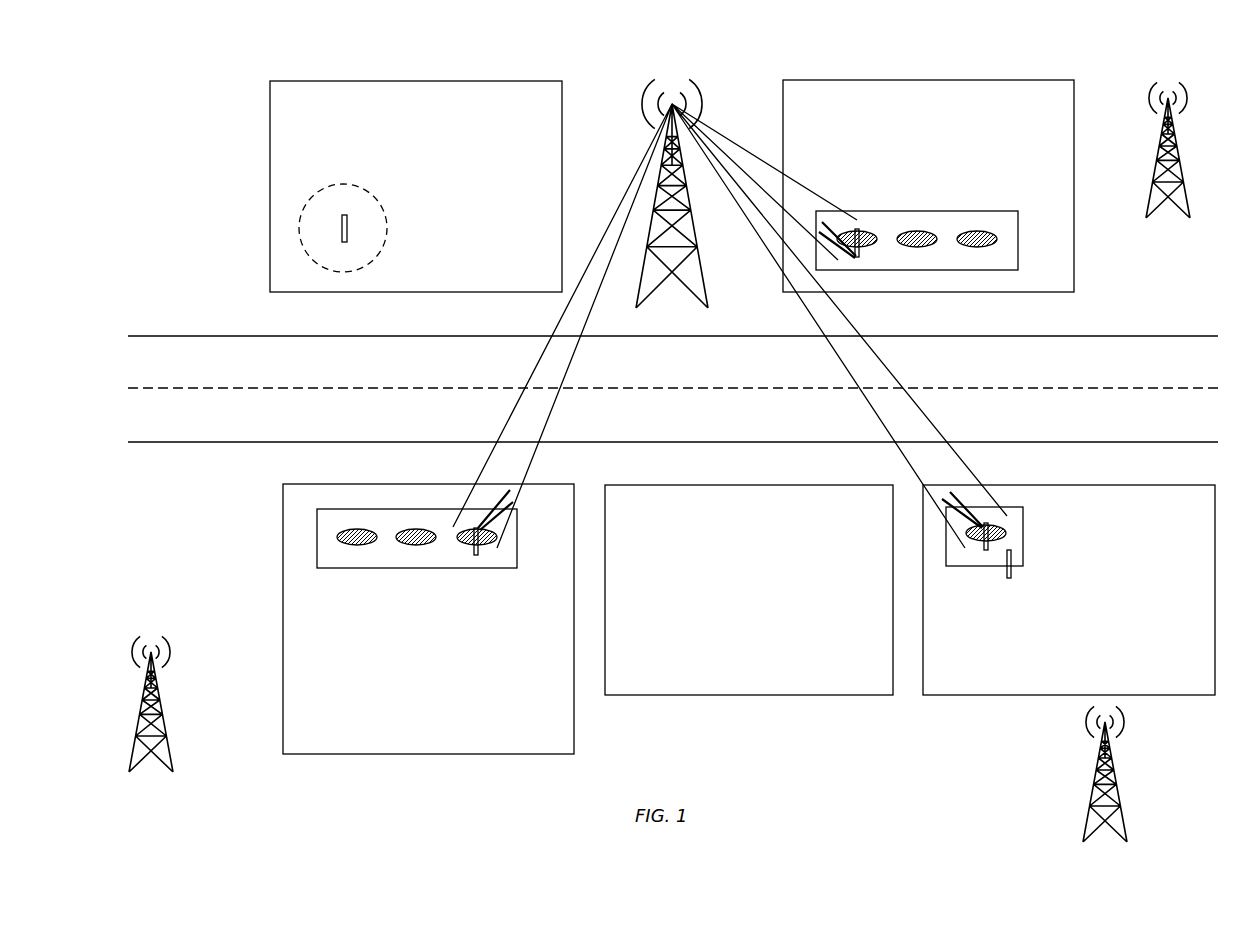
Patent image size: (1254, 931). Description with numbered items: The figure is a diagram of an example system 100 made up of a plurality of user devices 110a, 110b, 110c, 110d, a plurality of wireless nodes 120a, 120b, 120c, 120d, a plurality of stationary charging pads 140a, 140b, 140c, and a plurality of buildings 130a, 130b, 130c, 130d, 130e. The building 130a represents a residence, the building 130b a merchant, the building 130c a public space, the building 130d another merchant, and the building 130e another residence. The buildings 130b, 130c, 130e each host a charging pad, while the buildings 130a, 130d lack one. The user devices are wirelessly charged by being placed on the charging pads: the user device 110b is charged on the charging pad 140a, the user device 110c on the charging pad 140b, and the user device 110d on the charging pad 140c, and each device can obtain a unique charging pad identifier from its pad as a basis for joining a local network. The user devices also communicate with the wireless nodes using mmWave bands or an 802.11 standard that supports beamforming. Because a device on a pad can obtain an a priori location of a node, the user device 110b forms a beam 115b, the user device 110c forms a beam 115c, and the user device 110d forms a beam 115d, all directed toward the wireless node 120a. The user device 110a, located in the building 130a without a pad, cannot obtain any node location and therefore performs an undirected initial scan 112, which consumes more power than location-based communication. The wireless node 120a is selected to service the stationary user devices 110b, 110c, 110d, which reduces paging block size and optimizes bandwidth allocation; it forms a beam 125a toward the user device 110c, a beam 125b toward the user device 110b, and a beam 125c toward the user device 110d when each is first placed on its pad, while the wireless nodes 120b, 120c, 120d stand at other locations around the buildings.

The system 100 is at (188, 90).
The user device 110a is at (347, 232).
The user device 110b is at (857, 243).
The user device 110c is at (477, 556).
The user device 110d is at (987, 552).
The undirected initial scan 112 is at (346, 186).
The beam 115b is at (826, 224).
The beam 115c is at (508, 490).
The beam 115d is at (957, 498).
The wireless node 120a is at (708, 300).
The wireless node 120b is at (166, 736).
The wireless node 120c is at (1093, 788).
The wireless node 120d is at (1155, 194).
The beam 125a is at (562, 316).
The beam 125b is at (756, 150).
The beam 125c is at (838, 364).
The building 130a is at (383, 81).
The building 130b is at (913, 81).
The building 130c is at (576, 737).
The building 130d is at (828, 485).
The building 130e is at (1146, 485).
The charging pad 140a is at (858, 228).
The charging pad 140b is at (462, 532).
The charging pad 140c is at (1007, 533).